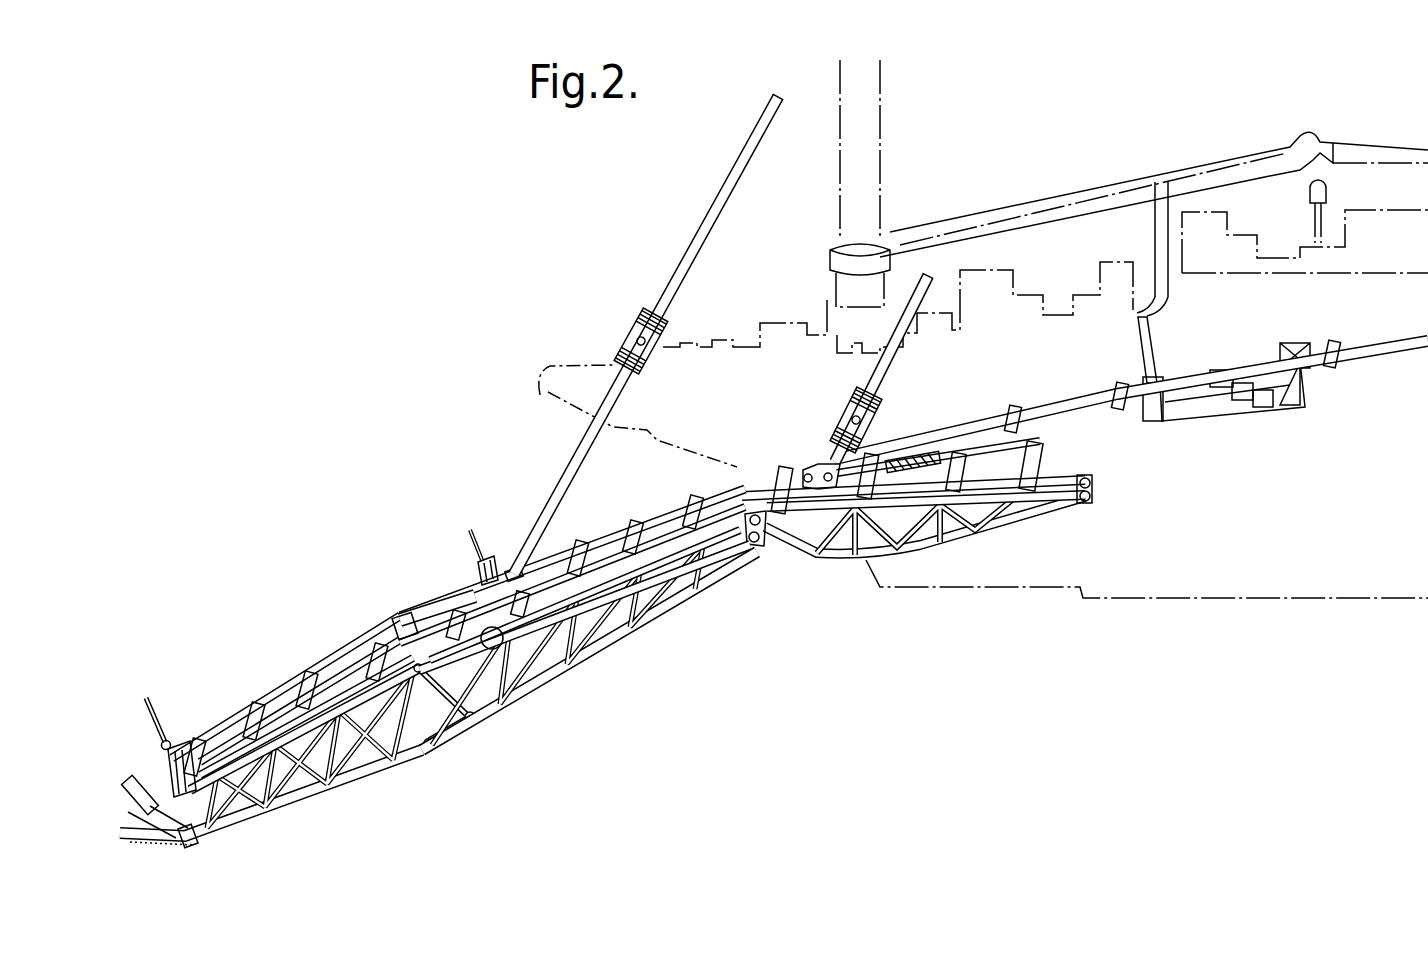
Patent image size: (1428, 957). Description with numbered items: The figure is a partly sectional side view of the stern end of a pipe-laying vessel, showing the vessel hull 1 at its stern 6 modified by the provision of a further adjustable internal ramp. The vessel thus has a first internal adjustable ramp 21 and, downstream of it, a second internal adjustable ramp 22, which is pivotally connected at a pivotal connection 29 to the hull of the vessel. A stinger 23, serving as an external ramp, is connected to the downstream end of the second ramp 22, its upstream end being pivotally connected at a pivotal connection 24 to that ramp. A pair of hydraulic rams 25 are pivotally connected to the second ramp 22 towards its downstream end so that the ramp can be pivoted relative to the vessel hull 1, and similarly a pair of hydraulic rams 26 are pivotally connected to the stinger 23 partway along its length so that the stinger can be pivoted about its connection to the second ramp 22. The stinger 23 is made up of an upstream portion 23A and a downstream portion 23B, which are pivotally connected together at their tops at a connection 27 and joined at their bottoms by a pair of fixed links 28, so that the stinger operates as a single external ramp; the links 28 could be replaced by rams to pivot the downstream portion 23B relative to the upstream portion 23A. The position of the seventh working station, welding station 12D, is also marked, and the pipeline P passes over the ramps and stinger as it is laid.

The vessel hull 1 is at (1302, 525).
The stern 6 is at (525, 383).
The welding station 12D is at (925, 478).
The first internal adjustable ramp 21 is at (1203, 430).
The second internal adjustable ramp 22 is at (929, 548).
The stinger 23 is at (438, 671).
The upstream portion of the stinger 23A is at (620, 645).
The downstream portion of the stinger 23B is at (280, 797).
The pivotal connection 24 is at (753, 545).
The hydraulic rams 25 is at (883, 352).
The hydraulic rams 26 is at (552, 508).
The connection 27 is at (397, 630).
The fixed links 28 is at (433, 742).
The pivotal connection 29 is at (1087, 505).
The pipeline P is at (731, 485).